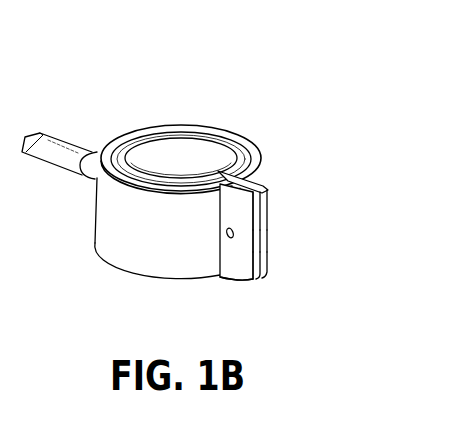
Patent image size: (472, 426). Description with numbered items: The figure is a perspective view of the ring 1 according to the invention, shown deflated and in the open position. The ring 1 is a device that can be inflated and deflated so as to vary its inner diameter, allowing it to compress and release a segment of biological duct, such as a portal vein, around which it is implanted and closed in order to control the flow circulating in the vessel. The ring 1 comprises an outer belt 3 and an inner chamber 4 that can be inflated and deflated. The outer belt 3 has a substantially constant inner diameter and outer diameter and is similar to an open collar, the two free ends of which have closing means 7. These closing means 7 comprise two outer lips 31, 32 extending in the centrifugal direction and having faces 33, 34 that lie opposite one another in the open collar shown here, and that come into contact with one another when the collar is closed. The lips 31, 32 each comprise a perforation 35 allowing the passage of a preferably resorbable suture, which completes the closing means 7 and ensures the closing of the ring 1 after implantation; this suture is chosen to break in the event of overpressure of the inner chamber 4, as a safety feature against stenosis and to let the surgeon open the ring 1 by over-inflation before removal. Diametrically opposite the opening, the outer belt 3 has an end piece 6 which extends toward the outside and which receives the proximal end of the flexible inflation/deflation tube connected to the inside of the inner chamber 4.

The ring 1 is at (195, 184).
The outer belt 3 is at (249, 153).
The outer lip 31 is at (264, 236).
The outer lip 32 is at (240, 267).
The face 33 is at (268, 202).
The face 34 is at (263, 255).
The perforation 35 is at (228, 238).
The inner chamber 4 is at (124, 126).
The end piece 6 is at (90, 181).
The closing means 7 is at (336, 160).